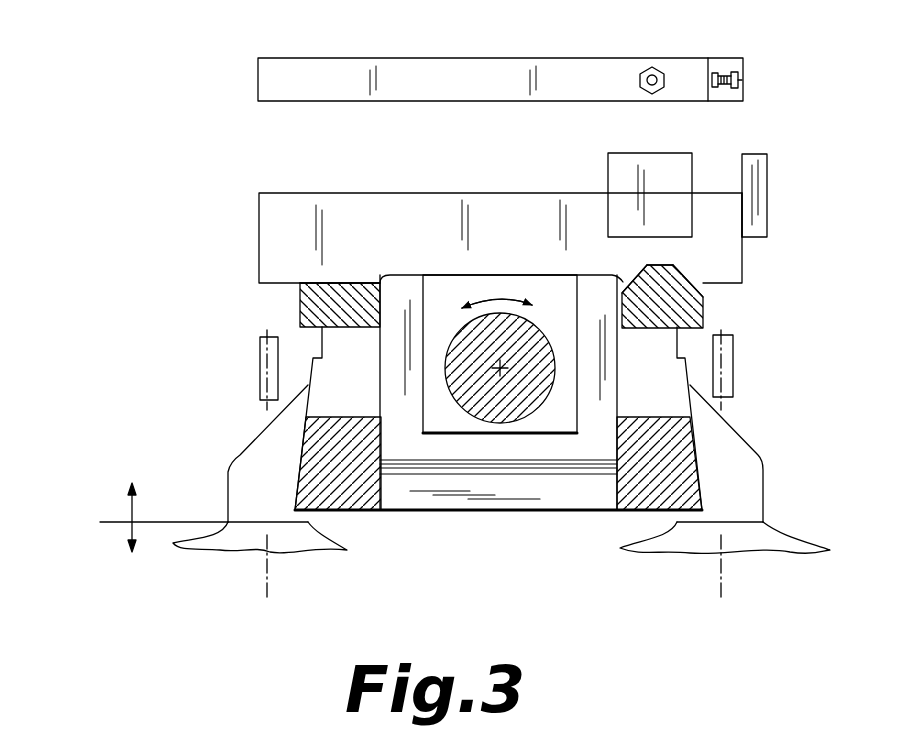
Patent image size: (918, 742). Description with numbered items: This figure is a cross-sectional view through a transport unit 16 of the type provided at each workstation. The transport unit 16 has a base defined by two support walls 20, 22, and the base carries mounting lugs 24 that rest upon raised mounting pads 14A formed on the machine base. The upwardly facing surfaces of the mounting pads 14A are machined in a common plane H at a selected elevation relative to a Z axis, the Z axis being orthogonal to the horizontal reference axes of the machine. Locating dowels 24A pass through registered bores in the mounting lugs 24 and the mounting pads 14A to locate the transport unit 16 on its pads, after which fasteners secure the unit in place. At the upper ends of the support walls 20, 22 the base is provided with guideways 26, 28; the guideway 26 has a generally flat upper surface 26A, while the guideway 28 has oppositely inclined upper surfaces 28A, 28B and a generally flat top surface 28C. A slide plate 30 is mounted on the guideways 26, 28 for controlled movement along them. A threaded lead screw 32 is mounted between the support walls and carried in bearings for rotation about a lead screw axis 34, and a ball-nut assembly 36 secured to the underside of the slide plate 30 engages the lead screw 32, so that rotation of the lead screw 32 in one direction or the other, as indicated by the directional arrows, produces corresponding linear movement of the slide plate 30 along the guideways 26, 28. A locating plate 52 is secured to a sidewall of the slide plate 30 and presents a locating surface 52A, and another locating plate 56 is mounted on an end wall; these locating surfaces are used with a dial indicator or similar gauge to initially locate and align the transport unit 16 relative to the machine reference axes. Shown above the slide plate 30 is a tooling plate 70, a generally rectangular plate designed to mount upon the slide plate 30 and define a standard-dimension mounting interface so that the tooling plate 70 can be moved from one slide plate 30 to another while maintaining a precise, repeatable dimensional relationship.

The tooling plate 70 is at (417, 56).
The slide plate 30 is at (281, 190).
The locating plate 56 is at (630, 162).
The locating plate 52 is at (752, 153).
The locating surface 52A is at (740, 166).
The guideway 26 is at (300, 305).
The flat upper surface 26A is at (343, 283).
The guideway 28 is at (705, 311).
The inclined upper surface 28A is at (636, 274).
The inclined upper surface 28B is at (690, 283).
The flat top surface 28C is at (662, 265).
The ball-nut assembly 36 is at (428, 292).
The lead screw 32 is at (555, 385).
The lead screw axis 34 is at (500, 368).
The support wall 20 is at (357, 514).
The support wall 22 is at (637, 502).
The mounting lug 24 is at (274, 444).
The locating dowel 24A is at (260, 366).
The mounting pad 14A is at (292, 548).
The common plane H is at (108, 518).
The Z axis Z is at (128, 510).
The transport unit 16 is at (182, 330).